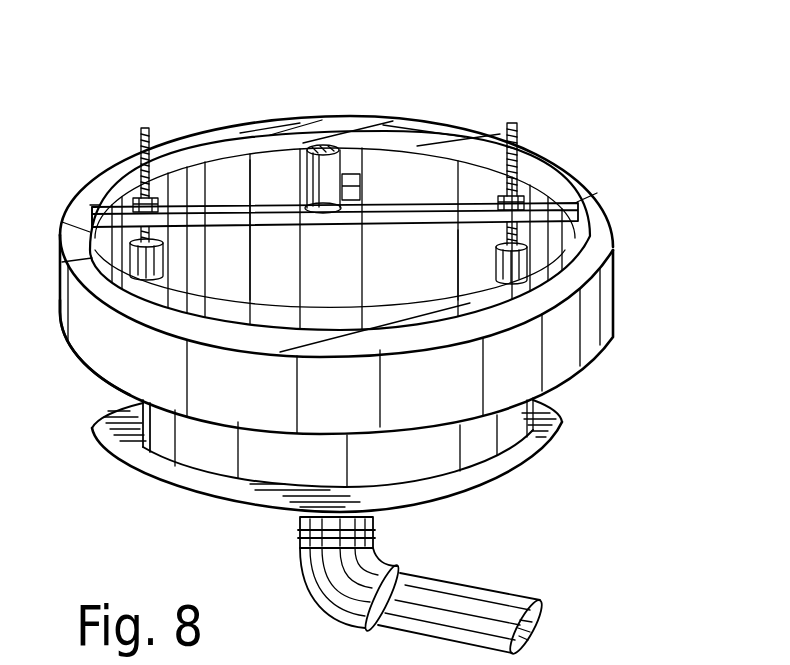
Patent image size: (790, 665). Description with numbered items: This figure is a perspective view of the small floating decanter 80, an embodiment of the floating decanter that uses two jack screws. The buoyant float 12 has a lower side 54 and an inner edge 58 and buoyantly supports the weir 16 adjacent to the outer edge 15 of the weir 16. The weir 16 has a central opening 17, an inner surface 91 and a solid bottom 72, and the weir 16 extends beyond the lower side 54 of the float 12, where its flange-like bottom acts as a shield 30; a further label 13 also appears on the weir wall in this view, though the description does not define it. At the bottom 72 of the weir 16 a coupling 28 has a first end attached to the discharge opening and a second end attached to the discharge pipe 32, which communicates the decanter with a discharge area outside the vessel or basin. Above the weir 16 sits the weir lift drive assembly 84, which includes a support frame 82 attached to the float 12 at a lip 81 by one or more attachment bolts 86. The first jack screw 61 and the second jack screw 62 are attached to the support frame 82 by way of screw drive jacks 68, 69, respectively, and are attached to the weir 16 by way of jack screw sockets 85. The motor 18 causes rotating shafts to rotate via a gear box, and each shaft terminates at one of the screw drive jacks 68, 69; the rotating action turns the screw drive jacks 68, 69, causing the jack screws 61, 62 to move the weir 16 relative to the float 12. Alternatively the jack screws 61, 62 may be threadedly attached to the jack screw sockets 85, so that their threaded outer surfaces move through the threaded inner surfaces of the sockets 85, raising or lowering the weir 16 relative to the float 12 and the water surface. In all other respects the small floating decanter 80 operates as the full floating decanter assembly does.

The float 12 is at (592, 236).
The drum panel 13 is at (288, 193).
The outer edge of weir 15 is at (183, 440).
The weir 16 is at (442, 471).
The central opening 17 is at (245, 258).
The motor 18 is at (325, 143).
The coupling 28 is at (392, 561).
The shield 30 is at (560, 434).
The discharge pipe 32 is at (507, 553).
The lower side of float 54 is at (78, 366).
The inner edge of float 58 is at (407, 191).
The first jack screw 61 is at (145, 127).
The second jack screw 62 is at (511, 123).
The screw drive jack 68 is at (132, 202).
The screw drive jack 69 is at (530, 198).
The solid bottom 72 is at (298, 513).
The small floating decanter 80 is at (625, 171).
The lip 81 is at (270, 140).
The support frame 82 is at (240, 205).
The weir lift drive assembly 84 is at (424, 198).
The jack screw socket 85 is at (143, 258).
The attachment bolt 86 is at (97, 203).
The inner surface of weir 91 is at (427, 283).